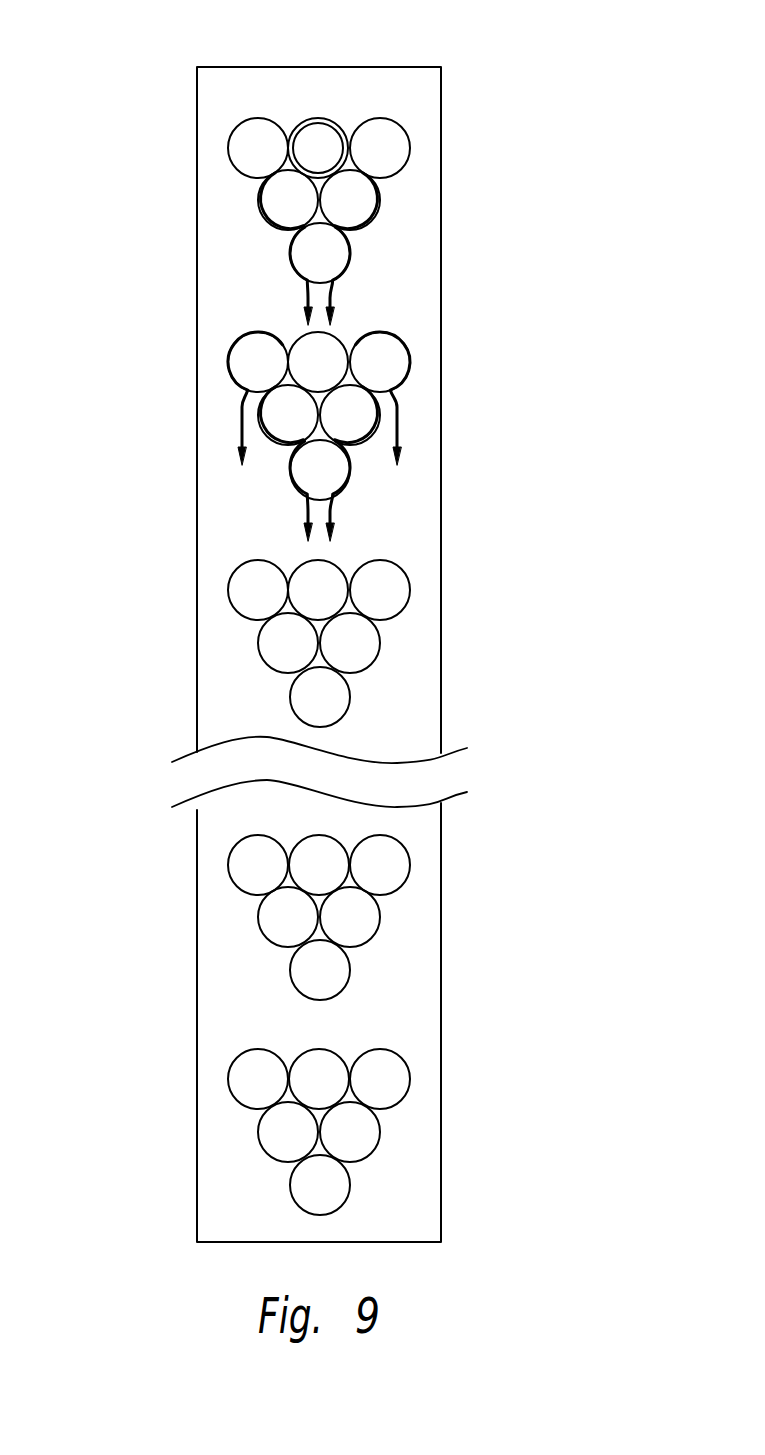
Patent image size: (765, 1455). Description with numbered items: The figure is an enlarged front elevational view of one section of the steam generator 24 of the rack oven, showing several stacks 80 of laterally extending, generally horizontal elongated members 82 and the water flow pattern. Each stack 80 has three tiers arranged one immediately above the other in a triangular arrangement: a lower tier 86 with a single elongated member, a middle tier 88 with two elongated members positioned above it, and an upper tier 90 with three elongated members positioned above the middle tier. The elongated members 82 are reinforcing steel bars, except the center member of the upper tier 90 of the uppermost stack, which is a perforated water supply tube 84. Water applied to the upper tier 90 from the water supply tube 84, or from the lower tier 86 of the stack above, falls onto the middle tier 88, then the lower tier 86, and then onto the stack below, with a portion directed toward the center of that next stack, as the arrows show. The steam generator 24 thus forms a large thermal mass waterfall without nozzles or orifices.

The steam generator 24 is at (197, 527).
The stacks 80 is at (267, 202).
The elongated members 82 is at (310, 132).
The perforated water supply tube 84 is at (332, 132).
The lower tier 86 is at (474, 265).
The middle tier 88 is at (474, 213).
The upper tier 90 is at (468, 152).